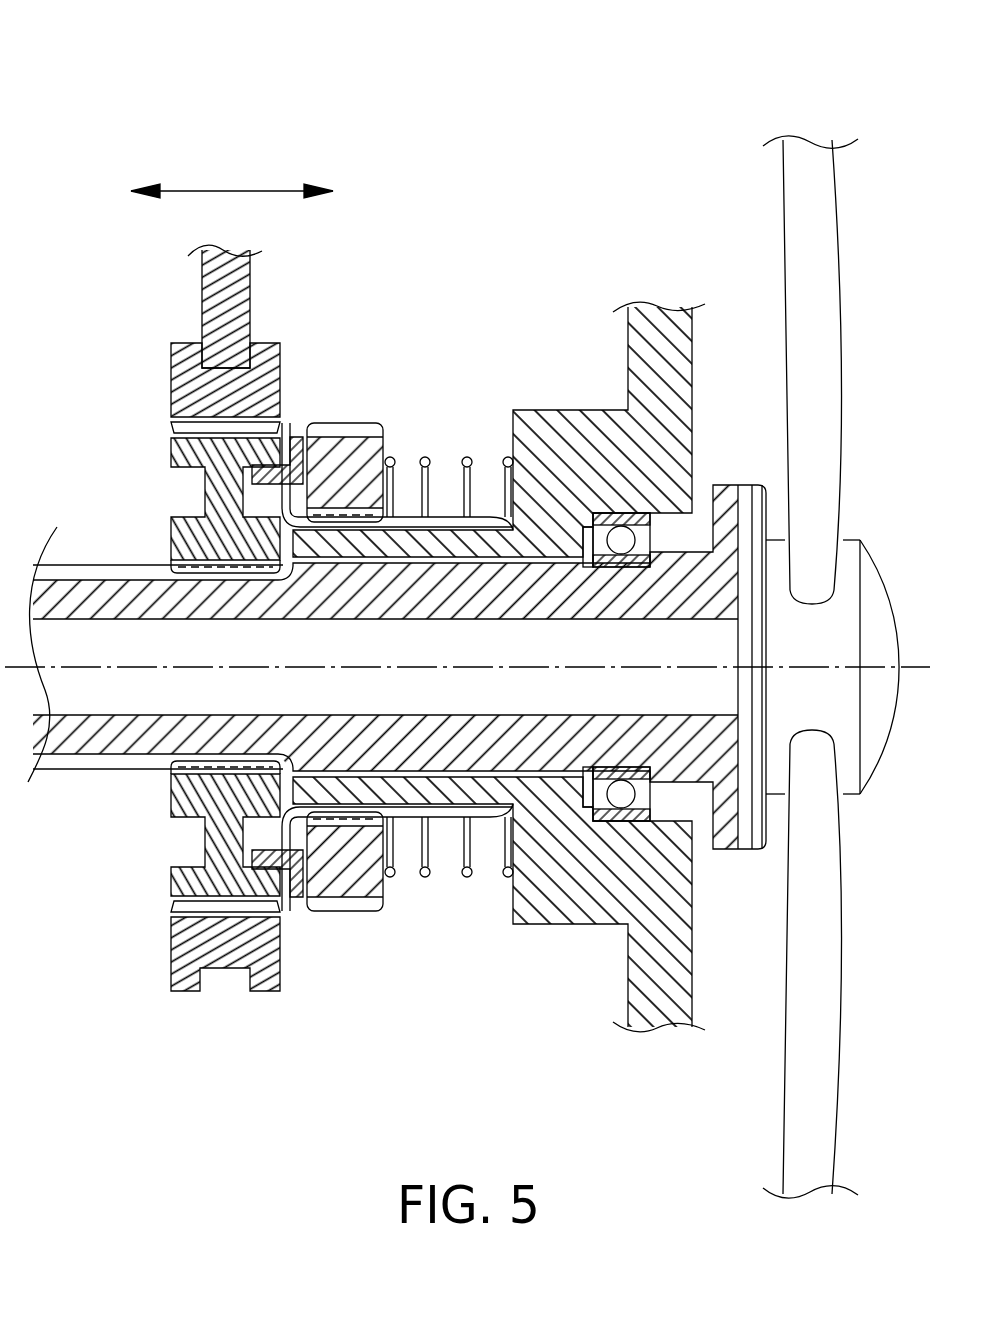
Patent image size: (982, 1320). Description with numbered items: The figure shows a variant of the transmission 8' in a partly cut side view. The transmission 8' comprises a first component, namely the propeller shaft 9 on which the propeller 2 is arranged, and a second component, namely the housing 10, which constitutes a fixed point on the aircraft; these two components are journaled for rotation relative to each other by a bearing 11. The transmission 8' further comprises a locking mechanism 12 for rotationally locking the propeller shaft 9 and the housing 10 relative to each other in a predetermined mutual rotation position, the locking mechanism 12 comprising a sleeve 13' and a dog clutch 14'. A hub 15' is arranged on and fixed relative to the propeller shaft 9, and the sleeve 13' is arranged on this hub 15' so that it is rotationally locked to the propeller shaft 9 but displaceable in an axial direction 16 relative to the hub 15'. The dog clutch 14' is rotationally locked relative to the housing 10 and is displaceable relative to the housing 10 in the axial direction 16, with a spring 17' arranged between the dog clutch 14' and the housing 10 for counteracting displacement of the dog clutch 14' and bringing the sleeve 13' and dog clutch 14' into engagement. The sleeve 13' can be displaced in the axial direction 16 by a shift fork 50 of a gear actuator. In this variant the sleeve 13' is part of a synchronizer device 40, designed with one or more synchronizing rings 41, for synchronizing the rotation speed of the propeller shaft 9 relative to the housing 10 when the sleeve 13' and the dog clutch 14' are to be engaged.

The propeller 2 is at (813, 223).
The transmission 8' is at (57, 41).
The propeller shaft 9 is at (105, 603).
The housing 10 is at (530, 443).
The bearing 11 is at (610, 522).
The locking mechanism 12 is at (352, 308).
The sleeve 13' is at (185, 667).
The dog clutch 14' is at (345, 631).
The hub 15' is at (185, 660).
The axial direction 16 is at (226, 190).
The spring 17' is at (449, 614).
The synchronizer device 40 is at (225, 1020).
The synchronizing ring 41 is at (300, 880).
The shift fork 50 is at (228, 300).